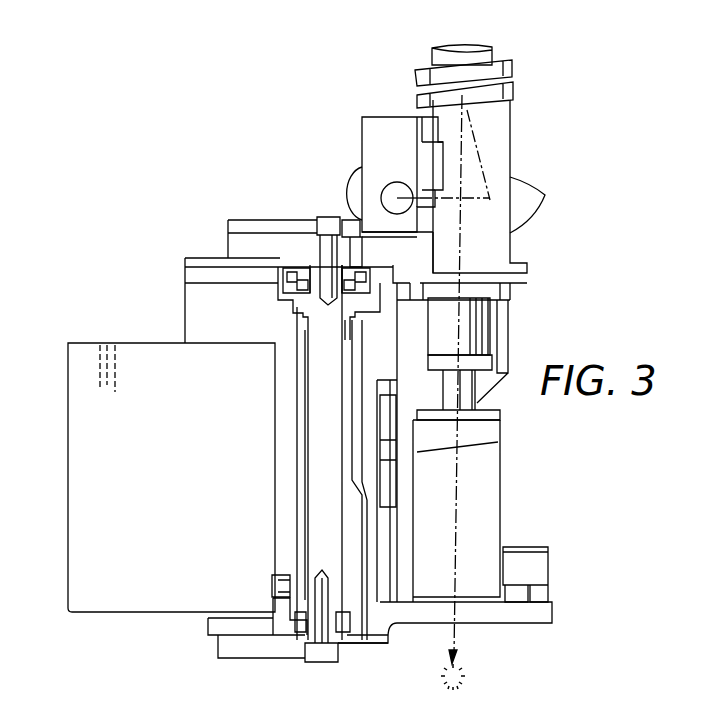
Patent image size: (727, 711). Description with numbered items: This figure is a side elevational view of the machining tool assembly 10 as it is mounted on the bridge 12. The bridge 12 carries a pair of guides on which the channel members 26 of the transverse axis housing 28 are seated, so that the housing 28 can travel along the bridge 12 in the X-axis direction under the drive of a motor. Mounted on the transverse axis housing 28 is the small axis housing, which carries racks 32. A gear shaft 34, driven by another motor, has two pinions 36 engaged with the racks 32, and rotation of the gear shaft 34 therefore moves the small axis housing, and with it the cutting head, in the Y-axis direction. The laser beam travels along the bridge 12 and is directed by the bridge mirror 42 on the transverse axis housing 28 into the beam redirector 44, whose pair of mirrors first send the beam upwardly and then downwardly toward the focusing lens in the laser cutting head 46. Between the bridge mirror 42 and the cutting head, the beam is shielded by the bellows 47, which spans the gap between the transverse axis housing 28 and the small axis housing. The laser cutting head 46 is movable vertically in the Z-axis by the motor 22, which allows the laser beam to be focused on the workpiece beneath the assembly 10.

The machining tool assembly 10 is at (572, 219).
The bridge 12 is at (67, 445).
The motor 22 is at (278, 590).
The channel members 26 is at (283, 600).
The transverse axis housing 28 is at (207, 243).
The racks 32 is at (237, 653).
The gear shaft 34 is at (320, 418).
The pinions 36 is at (327, 215).
The bridge mirror 42 is at (362, 133).
The beam redirector 44 is at (522, 112).
The laser cutting head 46 is at (498, 510).
The bellows 47 is at (430, 167).